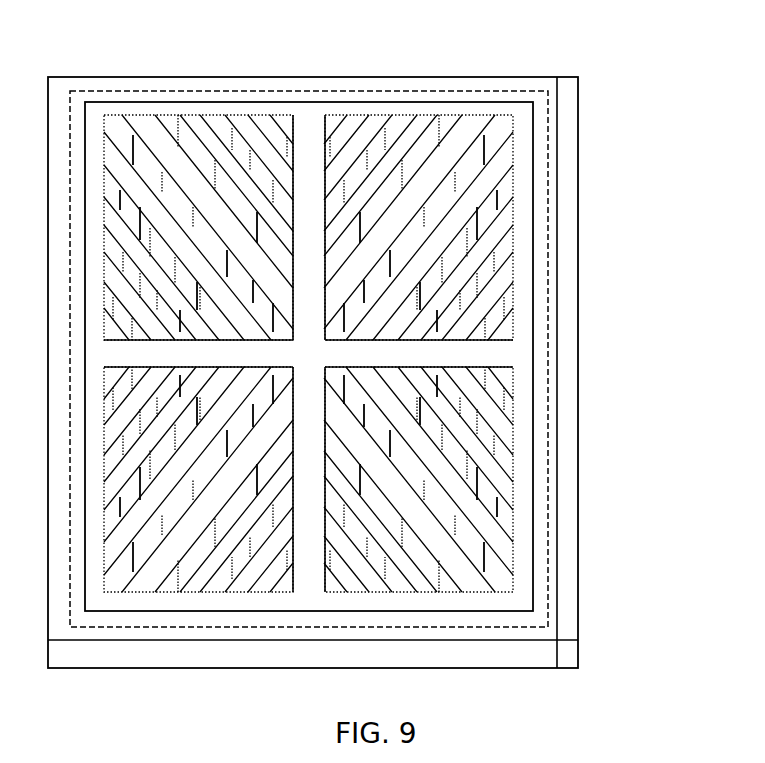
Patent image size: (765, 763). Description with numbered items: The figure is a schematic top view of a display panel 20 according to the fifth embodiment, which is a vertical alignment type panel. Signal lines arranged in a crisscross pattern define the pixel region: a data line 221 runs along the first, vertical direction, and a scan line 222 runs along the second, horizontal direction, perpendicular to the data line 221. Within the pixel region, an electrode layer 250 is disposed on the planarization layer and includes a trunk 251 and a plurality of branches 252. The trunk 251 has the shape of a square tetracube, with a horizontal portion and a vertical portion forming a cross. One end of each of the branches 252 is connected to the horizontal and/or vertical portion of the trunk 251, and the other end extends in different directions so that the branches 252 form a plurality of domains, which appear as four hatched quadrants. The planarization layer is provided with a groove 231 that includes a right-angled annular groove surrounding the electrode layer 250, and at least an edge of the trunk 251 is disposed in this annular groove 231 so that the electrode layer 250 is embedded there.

The display panel 20 is at (100, 44).
The data line 221 is at (562, 185).
The scan line 222 is at (535, 653).
The groove 231 is at (548, 591).
The electrode layer 250 is at (398, 356).
The trunk 251 is at (487, 357).
The branches 252 is at (472, 287).